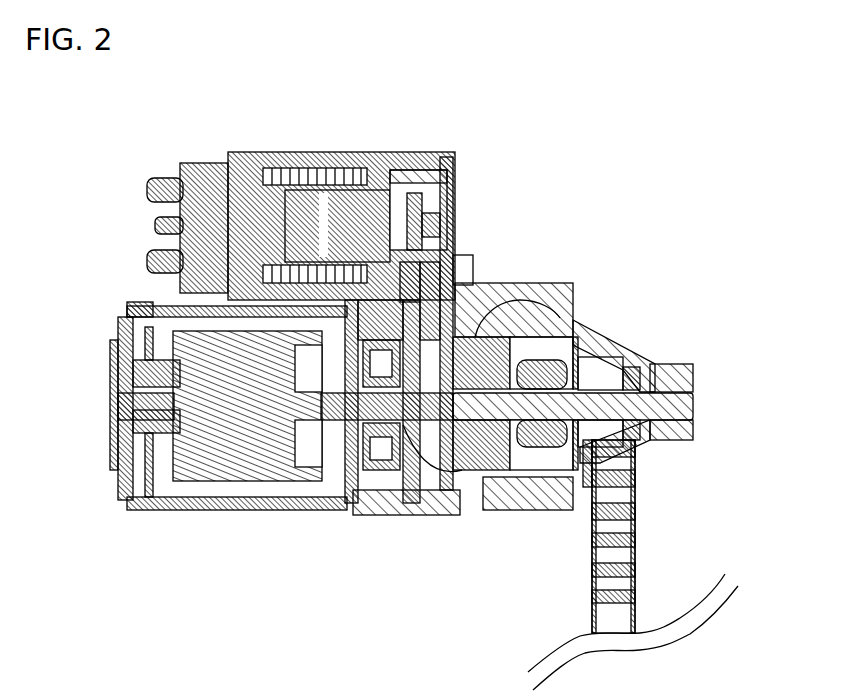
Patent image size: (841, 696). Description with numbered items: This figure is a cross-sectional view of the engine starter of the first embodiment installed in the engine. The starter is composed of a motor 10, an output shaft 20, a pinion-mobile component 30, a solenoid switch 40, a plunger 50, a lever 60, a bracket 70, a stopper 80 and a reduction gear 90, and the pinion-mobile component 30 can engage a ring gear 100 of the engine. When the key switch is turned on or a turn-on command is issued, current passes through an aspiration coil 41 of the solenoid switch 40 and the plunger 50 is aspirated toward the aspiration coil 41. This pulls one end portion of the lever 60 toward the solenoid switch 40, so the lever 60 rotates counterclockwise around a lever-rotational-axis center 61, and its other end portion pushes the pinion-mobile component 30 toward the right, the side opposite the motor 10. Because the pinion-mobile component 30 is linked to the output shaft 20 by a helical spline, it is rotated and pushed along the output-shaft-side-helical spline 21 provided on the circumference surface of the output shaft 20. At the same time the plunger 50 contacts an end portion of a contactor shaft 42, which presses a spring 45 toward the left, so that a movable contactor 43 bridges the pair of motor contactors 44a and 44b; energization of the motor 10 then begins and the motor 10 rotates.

The motor 10 is at (200, 507).
The output shaft 20 is at (692, 374).
The output-shaft-side-helical spline 21 is at (452, 445).
The pinion-mobile component 30 is at (570, 312).
The solenoid switch 40 is at (243, 153).
The aspiration coil 41 is at (380, 144).
The contactor shaft 42 is at (320, 152).
The movable contactor 43 is at (215, 165).
The motor contactor 44a is at (177, 174).
The motor contactor 44b is at (180, 283).
The spring 45 is at (158, 236).
The plunger 50 is at (455, 158).
The lever 60 is at (462, 292).
The lever-rotational-axis center 61 is at (460, 262).
The bracket 70 is at (573, 313).
The stopper 80 is at (630, 367).
The reduction gear 90 is at (302, 480).
The ring gear 100 is at (634, 462).